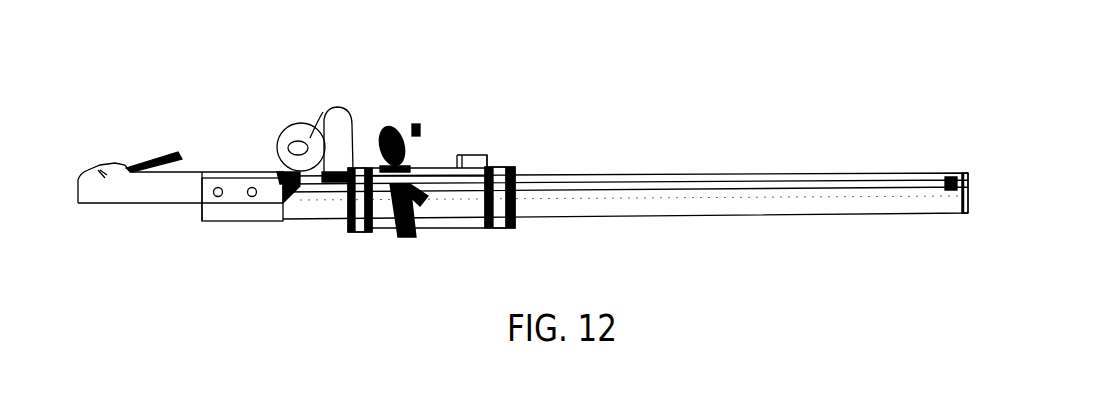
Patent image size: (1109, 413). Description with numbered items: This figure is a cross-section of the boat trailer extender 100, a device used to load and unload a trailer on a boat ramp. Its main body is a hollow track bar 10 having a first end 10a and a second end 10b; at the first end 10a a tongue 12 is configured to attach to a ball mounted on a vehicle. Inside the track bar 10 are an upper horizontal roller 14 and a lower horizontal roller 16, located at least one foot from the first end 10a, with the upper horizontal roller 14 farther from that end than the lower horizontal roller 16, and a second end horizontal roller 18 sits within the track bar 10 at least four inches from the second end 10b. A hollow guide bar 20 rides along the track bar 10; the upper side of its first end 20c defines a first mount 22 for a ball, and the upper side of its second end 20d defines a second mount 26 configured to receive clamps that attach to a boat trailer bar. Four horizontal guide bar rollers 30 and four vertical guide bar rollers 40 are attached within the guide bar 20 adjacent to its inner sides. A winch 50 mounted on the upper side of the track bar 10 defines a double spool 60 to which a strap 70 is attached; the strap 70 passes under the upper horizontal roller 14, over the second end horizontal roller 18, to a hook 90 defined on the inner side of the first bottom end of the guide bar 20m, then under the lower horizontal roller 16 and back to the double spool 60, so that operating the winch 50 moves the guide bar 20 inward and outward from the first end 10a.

The track bar 10 is at (747, 173).
The first end 10a is at (201, 206).
The second end 10b is at (968, 214).
The tongue 12 is at (108, 165).
The upper horizontal roller 14 is at (352, 166).
The lower horizontal roller 16 is at (286, 182).
The second end horizontal roller 18 is at (951, 176).
The guide bar 20 is at (428, 157).
The first end of the guide bar 20c is at (382, 136).
The second end of the guide bar 20d is at (460, 163).
The first bottom end of the guide bar 20m is at (413, 234).
The first mount 22 is at (413, 140).
The second mount 26 is at (488, 157).
The horizontal guide bar rollers 30 is at (515, 172).
The vertical guide bar rollers 40 is at (370, 233).
The winch 50 is at (277, 150).
The double spool 60 is at (323, 112).
The strap 70 is at (829, 176).
The hook 90 is at (418, 205).
The boat trailer extender 100 is at (716, 97).